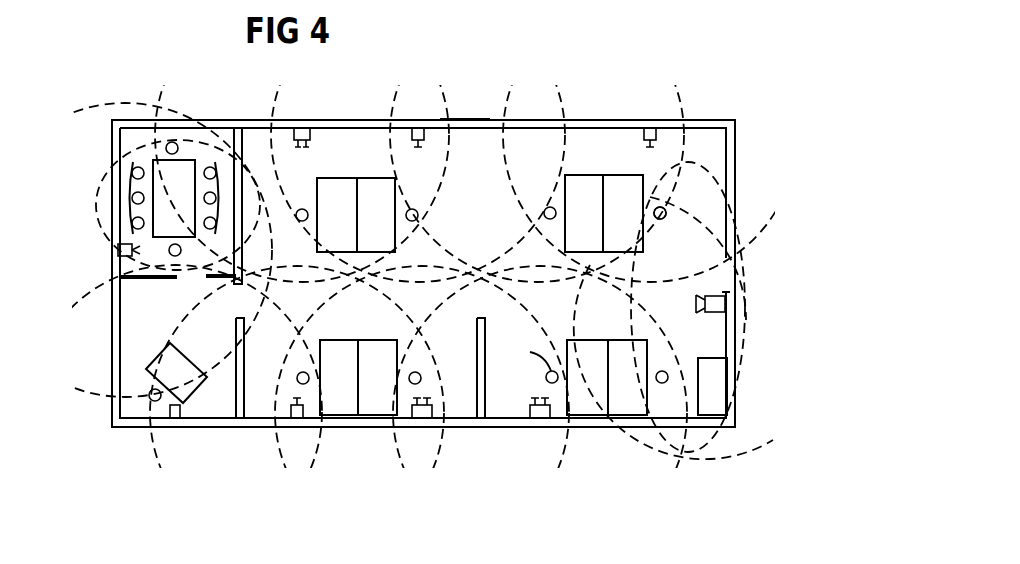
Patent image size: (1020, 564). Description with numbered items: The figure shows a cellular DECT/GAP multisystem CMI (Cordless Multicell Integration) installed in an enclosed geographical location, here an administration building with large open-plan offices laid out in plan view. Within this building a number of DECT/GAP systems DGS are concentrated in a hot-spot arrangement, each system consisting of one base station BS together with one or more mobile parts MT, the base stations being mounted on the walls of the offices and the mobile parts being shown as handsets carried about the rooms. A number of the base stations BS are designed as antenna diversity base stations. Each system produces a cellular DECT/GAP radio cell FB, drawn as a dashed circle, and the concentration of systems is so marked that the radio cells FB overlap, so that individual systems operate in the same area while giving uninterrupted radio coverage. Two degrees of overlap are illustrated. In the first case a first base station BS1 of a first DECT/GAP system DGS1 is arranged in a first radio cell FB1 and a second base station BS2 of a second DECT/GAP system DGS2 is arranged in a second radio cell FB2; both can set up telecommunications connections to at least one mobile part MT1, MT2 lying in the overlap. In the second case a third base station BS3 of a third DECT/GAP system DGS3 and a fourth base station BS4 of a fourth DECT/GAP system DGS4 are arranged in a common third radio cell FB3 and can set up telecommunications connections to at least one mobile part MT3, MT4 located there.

The mobile part MT is at (176, 142).
The mobile part MT1 is at (666, 216).
The mobile part MT2 is at (660, 213).
The mobile part MT3 is at (417, 372).
The mobile part MT4 is at (544, 367).
The base station BS is at (405, 123).
The first base station BS1 is at (648, 122).
The second base station BS2 is at (733, 317).
The third base station BS3 is at (540, 425).
The fourth base station BS4 is at (421, 425).
The radio cell FB is at (172, 100).
The first radio cell FB1 is at (753, 237).
The second radio cell FB2 is at (750, 450).
The common third radio cell FB3 is at (672, 455).
The cellular DECT/GAP multisystem CMI is at (467, 108).
The DECT/GAP system DGS is at (120, 253).
The first DECT/GAP system DGS1 is at (522, 104).
The second DECT/GAP system DGS2 is at (696, 145).
The third DECT/GAP system DGS3 is at (687, 464).
The fourth DECT/GAP system DGS4 is at (564, 442).